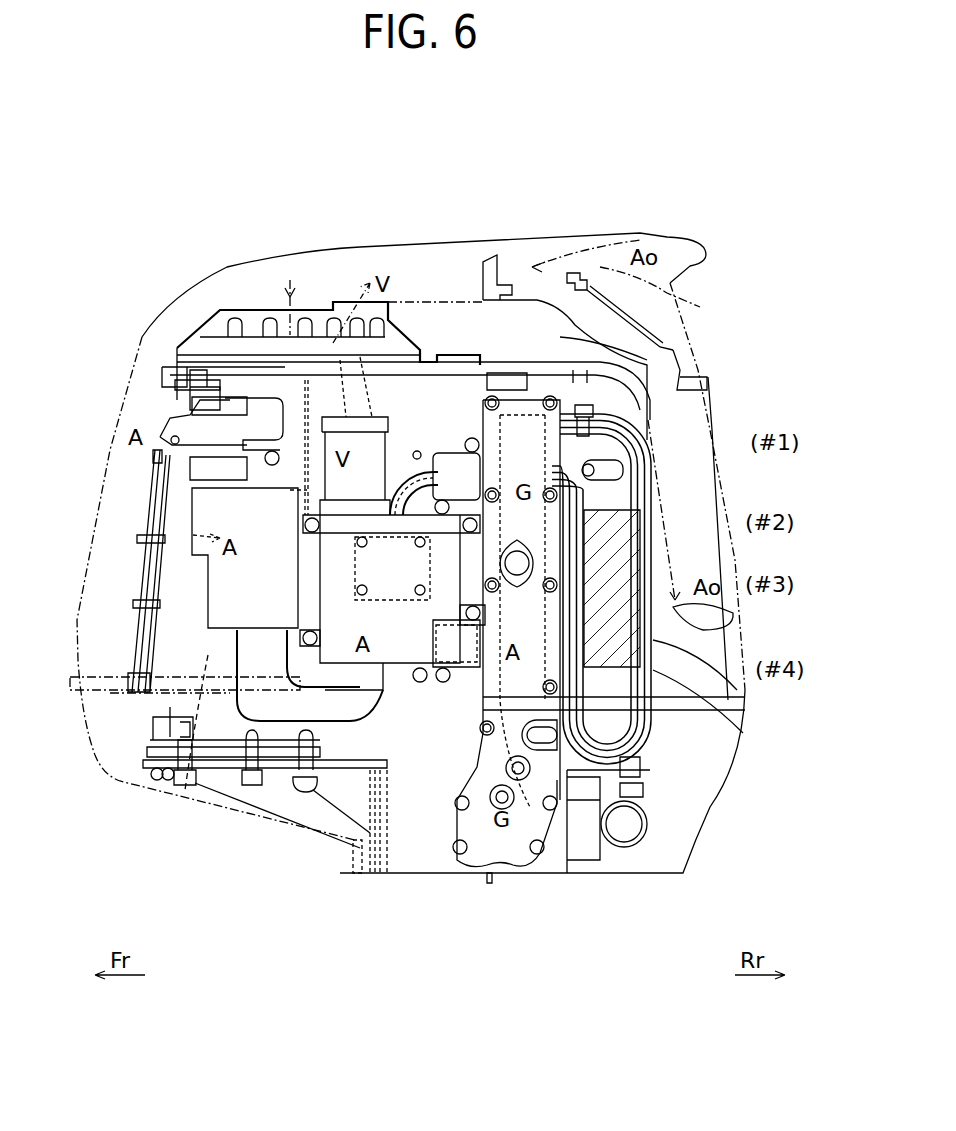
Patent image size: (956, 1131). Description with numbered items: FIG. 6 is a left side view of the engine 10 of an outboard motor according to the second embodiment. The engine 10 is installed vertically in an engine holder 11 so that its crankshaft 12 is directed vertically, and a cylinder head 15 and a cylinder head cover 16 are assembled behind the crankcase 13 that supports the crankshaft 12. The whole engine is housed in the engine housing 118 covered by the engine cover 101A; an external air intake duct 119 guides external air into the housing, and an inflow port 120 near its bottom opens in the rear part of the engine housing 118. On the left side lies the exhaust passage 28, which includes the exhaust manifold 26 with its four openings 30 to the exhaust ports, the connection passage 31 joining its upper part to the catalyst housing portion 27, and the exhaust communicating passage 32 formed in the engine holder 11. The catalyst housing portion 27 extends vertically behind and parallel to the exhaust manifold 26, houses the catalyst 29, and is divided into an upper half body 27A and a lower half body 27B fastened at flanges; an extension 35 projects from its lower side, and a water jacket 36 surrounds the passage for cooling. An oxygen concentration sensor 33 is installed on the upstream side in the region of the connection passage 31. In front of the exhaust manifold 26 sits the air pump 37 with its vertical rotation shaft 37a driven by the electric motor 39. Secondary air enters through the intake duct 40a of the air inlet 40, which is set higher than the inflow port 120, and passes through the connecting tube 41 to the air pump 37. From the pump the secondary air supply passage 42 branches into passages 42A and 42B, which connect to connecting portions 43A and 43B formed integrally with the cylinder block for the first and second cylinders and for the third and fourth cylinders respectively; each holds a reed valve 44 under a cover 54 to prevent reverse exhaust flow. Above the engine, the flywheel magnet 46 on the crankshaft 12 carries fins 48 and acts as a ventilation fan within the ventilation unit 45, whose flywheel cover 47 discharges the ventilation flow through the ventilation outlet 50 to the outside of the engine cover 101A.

The engine 10 is at (140, 409).
The engine holder 11 is at (297, 803).
The crankshaft 12 is at (328, 299).
The crankcase 13 is at (193, 780).
The cylinder head 15 is at (513, 410).
The cylinder head cover 16 is at (673, 350).
The exhaust manifold 26 is at (457, 377).
The catalyst housing portion 27 is at (745, 697).
The upper half body 27A is at (652, 560).
The lower half body 27B is at (720, 725).
The exhaust passage 28 is at (655, 485).
The catalyst 29 is at (650, 555).
The openings 30 is at (690, 375).
The connection passage 31 is at (610, 420).
The exhaust communicating passage 32 is at (520, 870).
The oxygen concentration sensor 33 is at (565, 370).
The extension 35 is at (653, 728).
The water jacket 36 is at (620, 440).
The air pump 37 is at (372, 725).
The rotation shaft 37a is at (357, 478).
The electric motor 39 is at (340, 445).
The air inlet 40 is at (200, 600).
The intake duct 40a is at (203, 524).
The connecting tube 41 is at (283, 763).
The secondary air supply passage 42 is at (392, 677).
The branching secondary air supply passage 42A is at (422, 453).
The branching secondary air supply passage 42B is at (383, 790).
The connecting portion 43A is at (480, 427).
The connecting portion 43B is at (473, 697).
The reed valve 44 is at (423, 457).
The ventilation unit 45 is at (175, 307).
The flywheel magnet 46 is at (195, 345).
The flywheel cover 47 is at (213, 317).
The fins 48 is at (277, 323).
The ventilation outlet 50 is at (333, 345).
The cover 54 is at (436, 490).
The engine cover 101A is at (672, 237).
The engine housing 118 is at (402, 277).
The external air intake duct 119 is at (560, 317).
The inflow port 120 is at (728, 632).